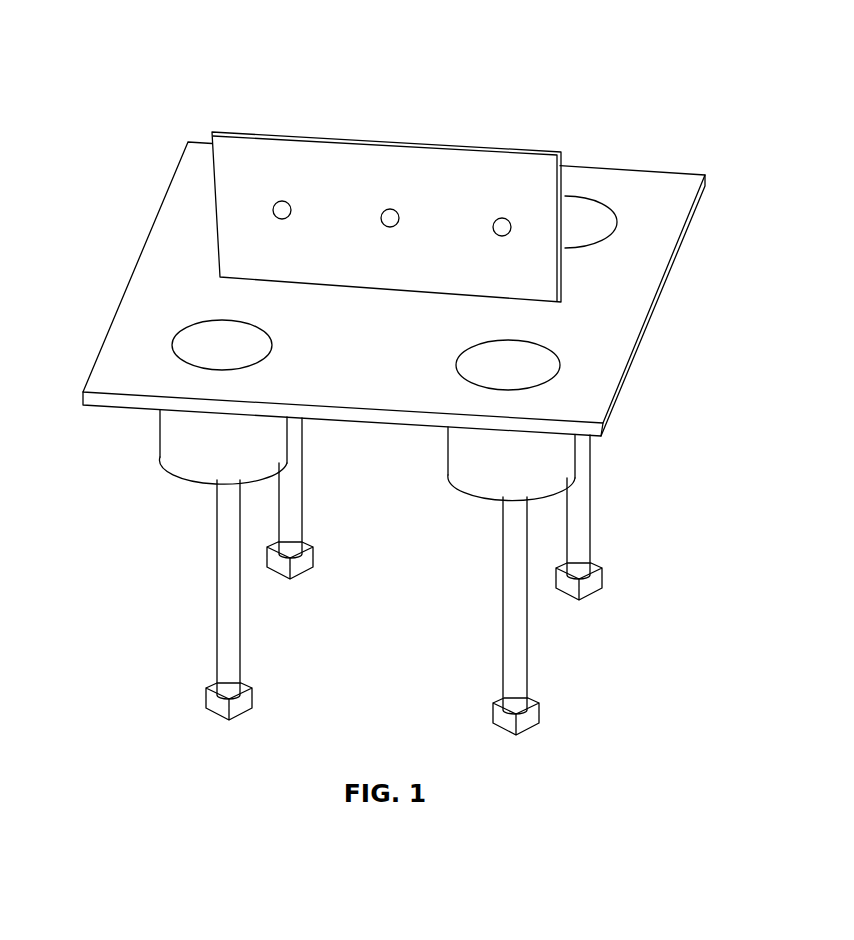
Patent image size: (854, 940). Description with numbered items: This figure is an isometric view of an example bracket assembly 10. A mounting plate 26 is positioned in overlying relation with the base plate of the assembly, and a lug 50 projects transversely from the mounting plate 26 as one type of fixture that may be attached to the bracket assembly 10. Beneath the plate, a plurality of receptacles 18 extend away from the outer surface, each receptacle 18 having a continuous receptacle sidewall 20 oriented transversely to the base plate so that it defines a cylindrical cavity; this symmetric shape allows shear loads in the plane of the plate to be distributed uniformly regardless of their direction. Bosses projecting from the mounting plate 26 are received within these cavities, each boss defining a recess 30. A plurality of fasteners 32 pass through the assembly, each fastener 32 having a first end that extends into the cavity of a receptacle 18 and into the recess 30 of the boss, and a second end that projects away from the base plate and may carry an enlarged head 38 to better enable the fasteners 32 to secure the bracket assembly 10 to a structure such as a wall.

The bracket assembly 10 is at (113, 42).
The receptacle 18 is at (190, 447).
The receptacle sidewall 20 is at (203, 465).
The mounting plate 26 is at (640, 268).
The recess 30 is at (222, 348).
The fastener 32 is at (242, 642).
The enlarged head 38 is at (220, 713).
The lug 50 is at (400, 167).